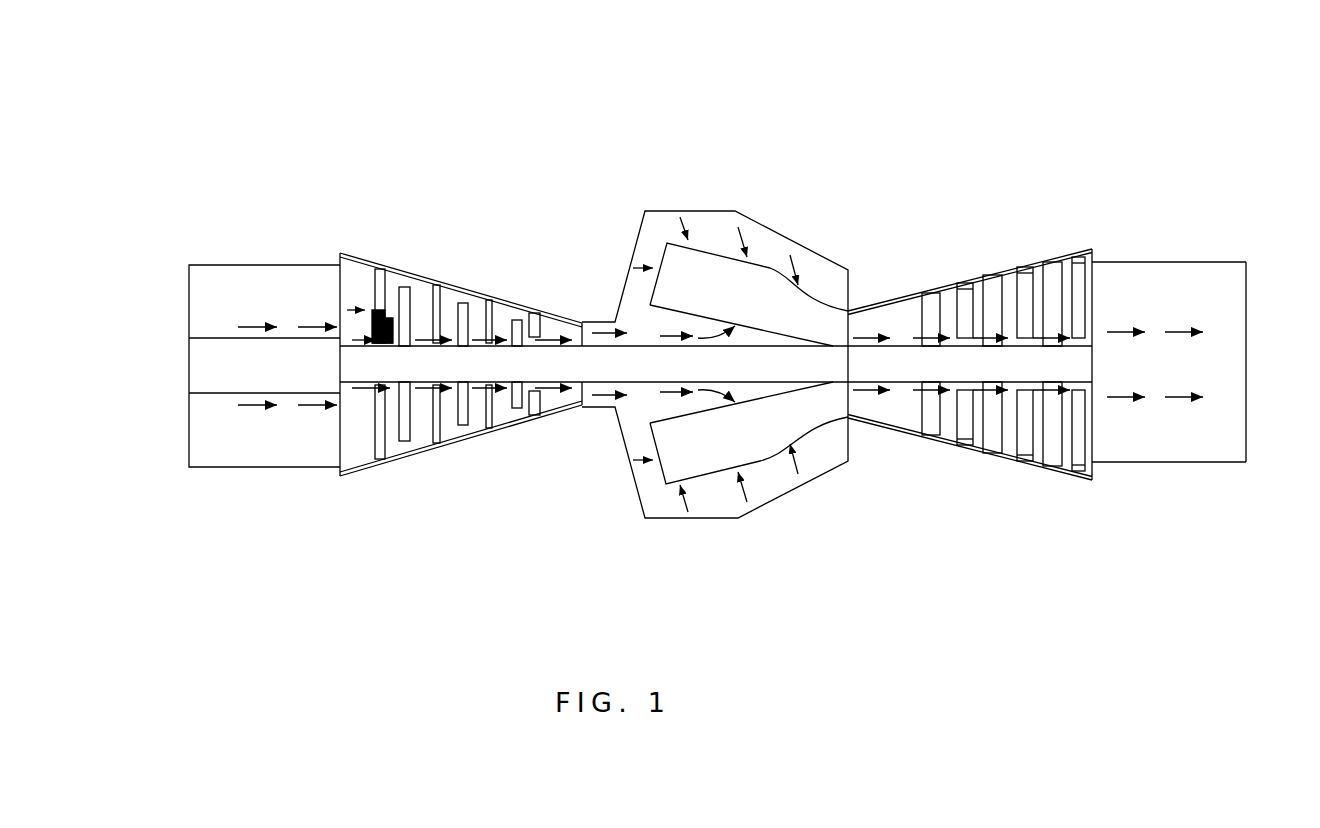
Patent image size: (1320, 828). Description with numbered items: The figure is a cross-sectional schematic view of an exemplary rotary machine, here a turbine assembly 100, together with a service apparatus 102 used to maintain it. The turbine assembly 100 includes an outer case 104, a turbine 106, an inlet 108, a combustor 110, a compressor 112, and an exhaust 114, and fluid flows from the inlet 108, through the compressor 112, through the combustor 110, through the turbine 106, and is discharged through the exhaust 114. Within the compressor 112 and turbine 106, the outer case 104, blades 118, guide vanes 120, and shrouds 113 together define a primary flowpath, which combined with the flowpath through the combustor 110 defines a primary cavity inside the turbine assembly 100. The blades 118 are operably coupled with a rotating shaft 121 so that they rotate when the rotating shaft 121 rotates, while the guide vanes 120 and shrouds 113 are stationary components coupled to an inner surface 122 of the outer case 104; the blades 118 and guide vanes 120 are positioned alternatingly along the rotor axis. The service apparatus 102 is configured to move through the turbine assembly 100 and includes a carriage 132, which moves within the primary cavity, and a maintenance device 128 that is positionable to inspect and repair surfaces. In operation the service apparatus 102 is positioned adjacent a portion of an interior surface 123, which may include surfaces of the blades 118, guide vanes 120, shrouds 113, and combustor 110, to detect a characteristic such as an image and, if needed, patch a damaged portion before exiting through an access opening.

The turbine assembly 100 is at (702, 318).
The service apparatus 102 is at (350, 308).
The outer case 104 is at (1082, 251).
The turbine 106 is at (987, 475).
The inlet 108 is at (172, 433).
The combustor 110 is at (670, 532).
The compressor 112 is at (412, 474).
The shrouds 113 is at (963, 450).
The exhaust 114 is at (1252, 447).
The blades 118 is at (405, 286).
The guide vanes 120 is at (375, 286).
The rotating shaft 121 is at (362, 368).
The inner surface 122 is at (864, 320).
The interior surface 123 is at (534, 416).
The maintenance device 128 is at (372, 311).
The carriage 132 is at (392, 346).